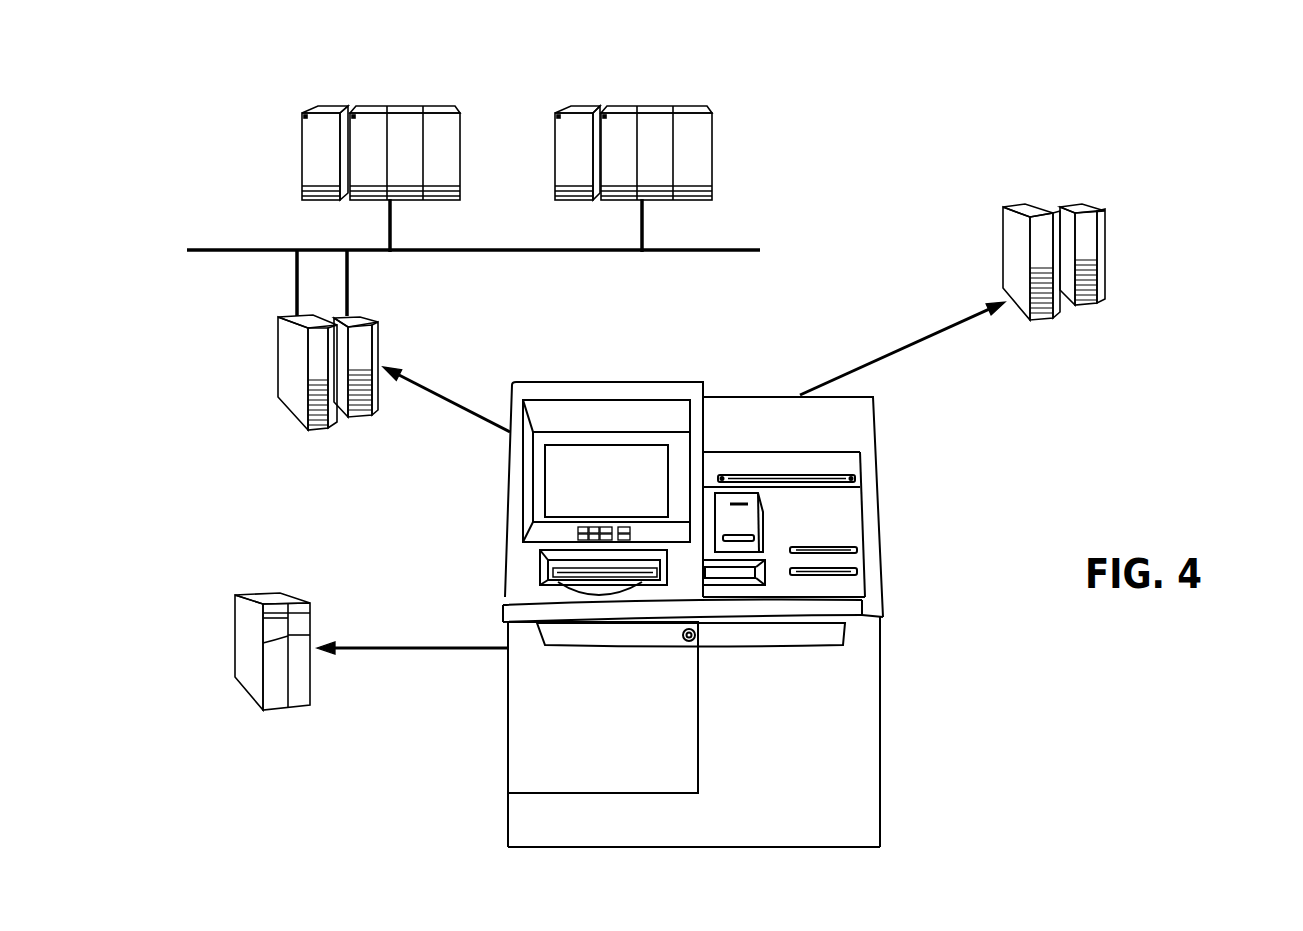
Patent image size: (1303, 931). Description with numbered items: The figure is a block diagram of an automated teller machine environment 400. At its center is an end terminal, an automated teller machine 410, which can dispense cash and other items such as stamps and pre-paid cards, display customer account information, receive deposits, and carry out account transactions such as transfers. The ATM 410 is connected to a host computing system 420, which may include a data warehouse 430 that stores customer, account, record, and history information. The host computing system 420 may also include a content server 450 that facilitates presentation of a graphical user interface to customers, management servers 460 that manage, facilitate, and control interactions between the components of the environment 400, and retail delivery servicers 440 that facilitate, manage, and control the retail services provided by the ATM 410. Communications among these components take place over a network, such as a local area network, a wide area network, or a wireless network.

The automated teller machine environment 400 is at (1050, 106).
The automated teller machine 410 is at (883, 780).
The host computing system 420 is at (302, 150).
The data warehouse 430 is at (712, 153).
The retail delivery servicers 440 is at (382, 342).
The content server 450 is at (297, 707).
The management servers 460 is at (1085, 205).